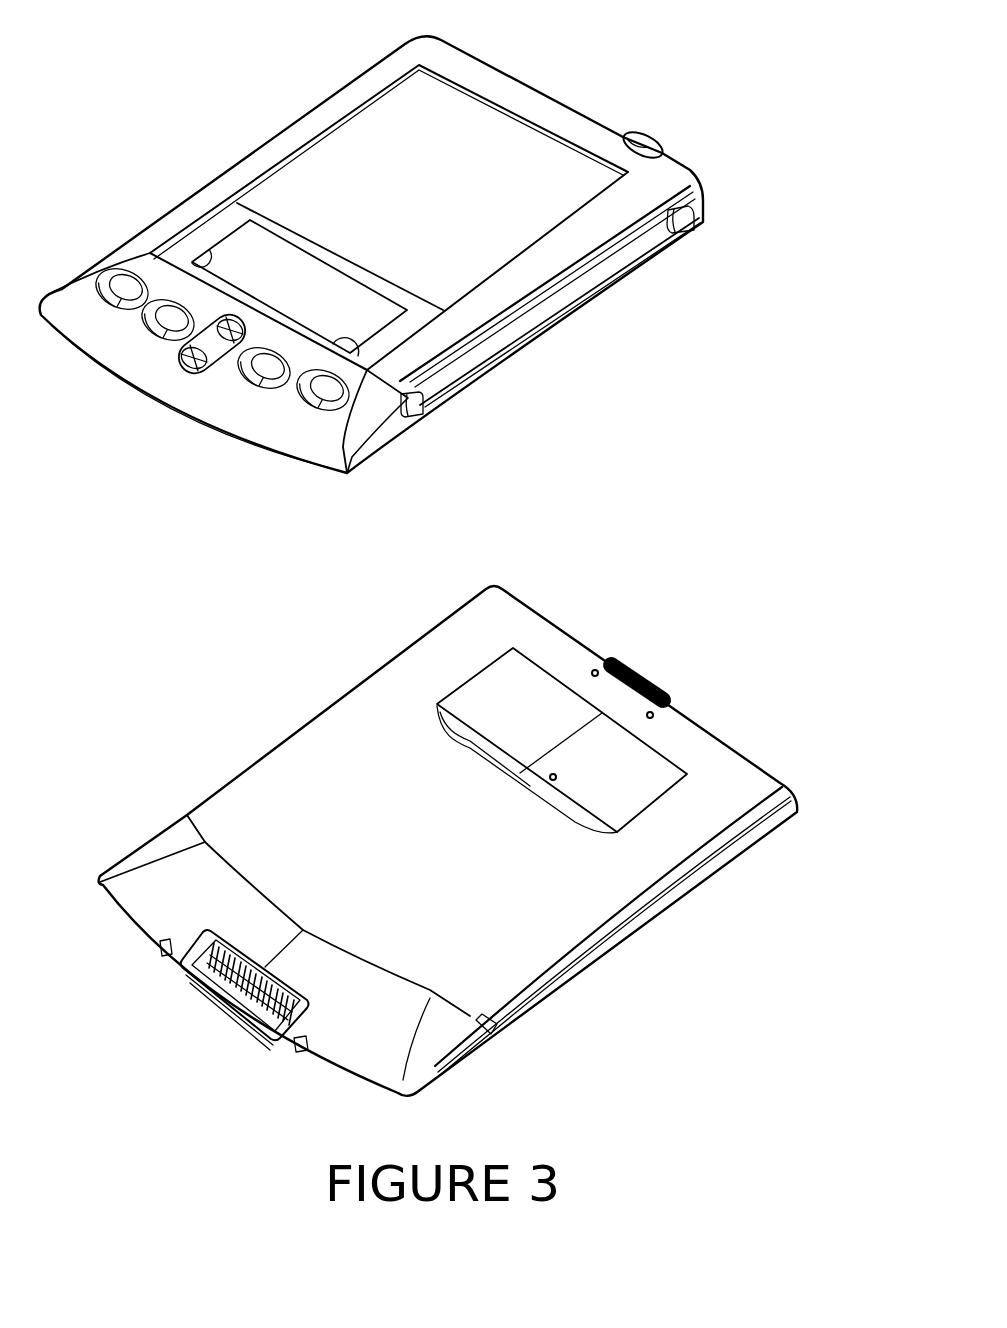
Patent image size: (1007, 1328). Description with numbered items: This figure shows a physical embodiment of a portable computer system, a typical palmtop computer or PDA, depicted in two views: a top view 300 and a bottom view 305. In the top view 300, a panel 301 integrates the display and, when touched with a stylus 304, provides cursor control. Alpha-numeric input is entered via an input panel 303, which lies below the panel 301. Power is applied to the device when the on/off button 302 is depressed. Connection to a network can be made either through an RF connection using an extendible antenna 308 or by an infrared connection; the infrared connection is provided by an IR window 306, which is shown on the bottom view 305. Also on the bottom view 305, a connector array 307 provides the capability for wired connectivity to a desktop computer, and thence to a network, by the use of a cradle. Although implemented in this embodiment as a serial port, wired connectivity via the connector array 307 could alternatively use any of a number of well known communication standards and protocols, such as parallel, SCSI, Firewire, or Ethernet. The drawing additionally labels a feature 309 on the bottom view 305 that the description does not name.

The top view 300 is at (263, 147).
The panel 301 is at (445, 177).
The on/off button 302 is at (664, 143).
The input panel 303 is at (277, 290).
The stylus 304 is at (543, 307).
The bottom view 305 is at (211, 774).
The IR window 306 is at (660, 683).
The connector array 307 is at (215, 1016).
The extendible antenna 308 is at (723, 873).
The battery door 309 is at (605, 770).